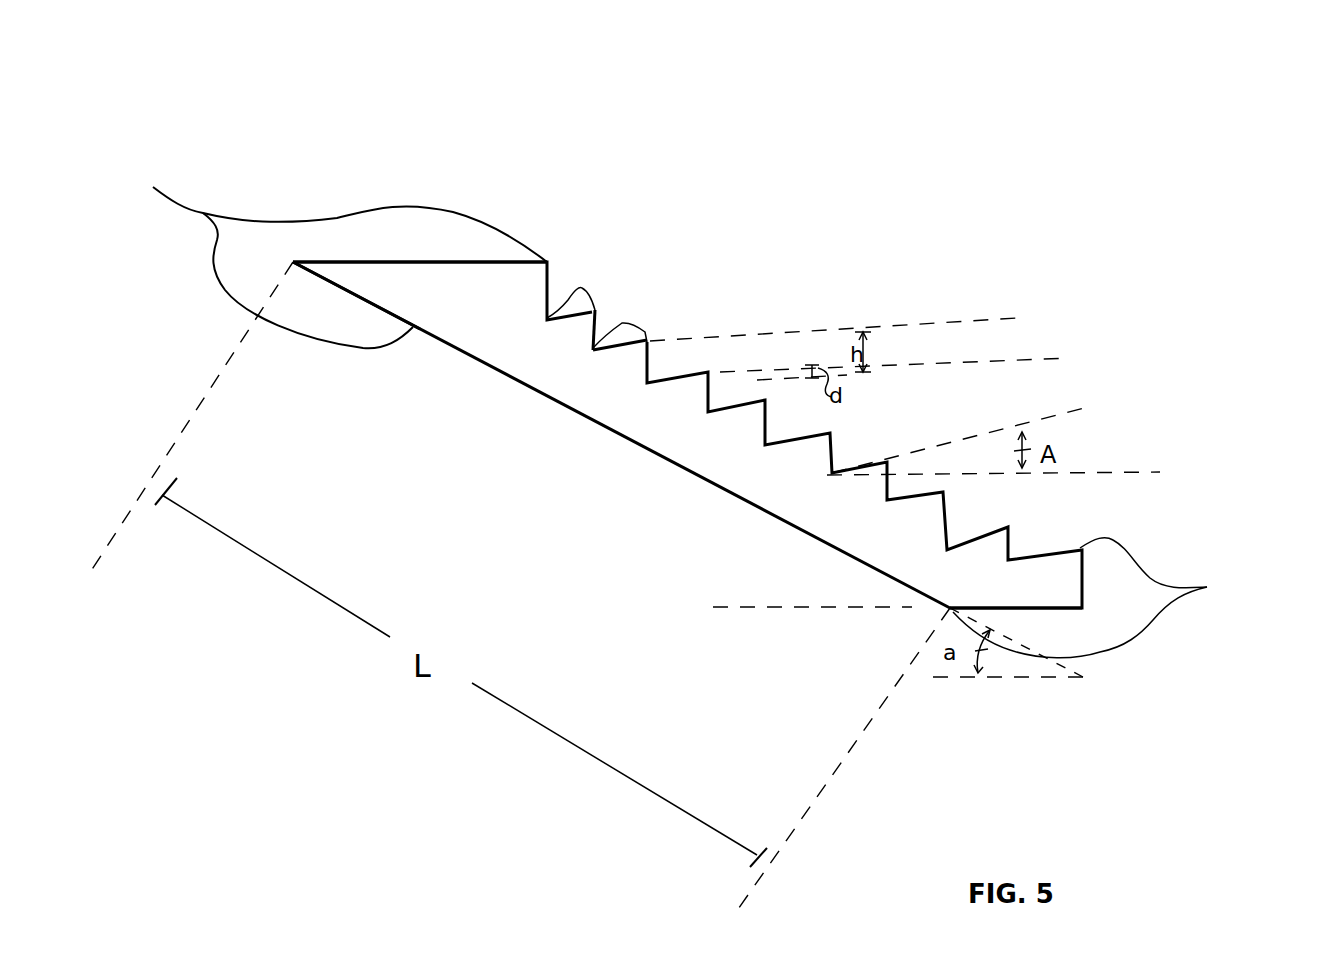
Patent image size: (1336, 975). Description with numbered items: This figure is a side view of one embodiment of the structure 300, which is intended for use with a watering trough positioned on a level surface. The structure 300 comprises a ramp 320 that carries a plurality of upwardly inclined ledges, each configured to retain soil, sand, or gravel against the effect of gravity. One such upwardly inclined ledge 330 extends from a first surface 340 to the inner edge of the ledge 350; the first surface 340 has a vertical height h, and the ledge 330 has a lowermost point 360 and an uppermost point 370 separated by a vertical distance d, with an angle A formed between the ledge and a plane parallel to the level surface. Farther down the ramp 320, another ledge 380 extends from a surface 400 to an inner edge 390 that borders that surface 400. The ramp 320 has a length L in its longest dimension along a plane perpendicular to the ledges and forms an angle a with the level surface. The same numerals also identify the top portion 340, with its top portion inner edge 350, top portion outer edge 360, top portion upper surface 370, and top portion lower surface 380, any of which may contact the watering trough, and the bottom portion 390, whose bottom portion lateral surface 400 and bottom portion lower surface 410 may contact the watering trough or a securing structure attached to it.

The structure 300 is at (873, 233).
The ramp 320 is at (715, 448).
The upwardly inclined ledge 330 is at (585, 287).
The first surface 340 is at (685, 45).
The inner edge of the ledge 350 is at (547, 262).
The lowermost point 360 is at (292, 262).
The uppermost point 370 is at (432, 262).
The ledge 380 is at (357, 300).
The inner edge 390 is at (593, 317).
The surface 400 is at (595, 310).
The bottom portion lower surface 410 is at (1023, 610).